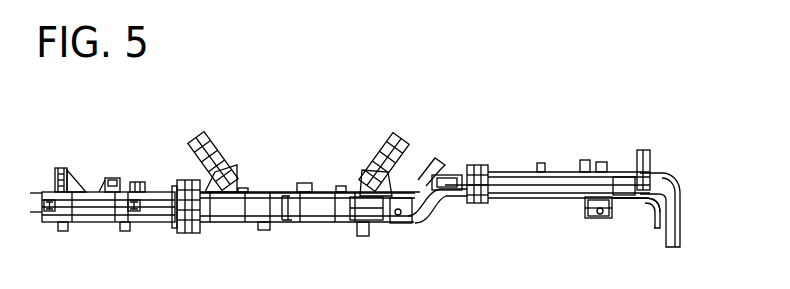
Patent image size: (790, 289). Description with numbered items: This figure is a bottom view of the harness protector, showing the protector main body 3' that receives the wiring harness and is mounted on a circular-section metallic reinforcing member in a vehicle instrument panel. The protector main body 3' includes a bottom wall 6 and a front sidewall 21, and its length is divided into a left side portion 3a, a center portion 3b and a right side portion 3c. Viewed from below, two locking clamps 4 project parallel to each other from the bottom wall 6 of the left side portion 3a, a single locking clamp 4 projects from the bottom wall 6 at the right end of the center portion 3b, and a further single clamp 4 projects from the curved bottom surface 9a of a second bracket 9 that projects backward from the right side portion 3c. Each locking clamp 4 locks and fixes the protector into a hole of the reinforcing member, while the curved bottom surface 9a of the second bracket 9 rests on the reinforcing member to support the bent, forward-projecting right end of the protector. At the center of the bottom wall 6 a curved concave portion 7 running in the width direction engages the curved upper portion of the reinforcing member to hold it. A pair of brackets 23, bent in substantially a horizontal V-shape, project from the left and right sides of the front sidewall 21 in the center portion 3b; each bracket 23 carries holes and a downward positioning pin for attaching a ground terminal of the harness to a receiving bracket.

The protector main body 3' is at (510, 90).
The left side portion 3a is at (145, 222).
The center portion 3b is at (297, 208).
The right side portion 3c is at (547, 199).
The locking clamp 4 is at (57, 210).
The bottom wall 6 is at (152, 208).
The curved concave portion 7 is at (290, 206).
The second bracket 9 is at (605, 219).
The curved bottom surface 9a is at (612, 219).
The front sidewall 21 is at (334, 192).
The bracket 23 is at (219, 154).